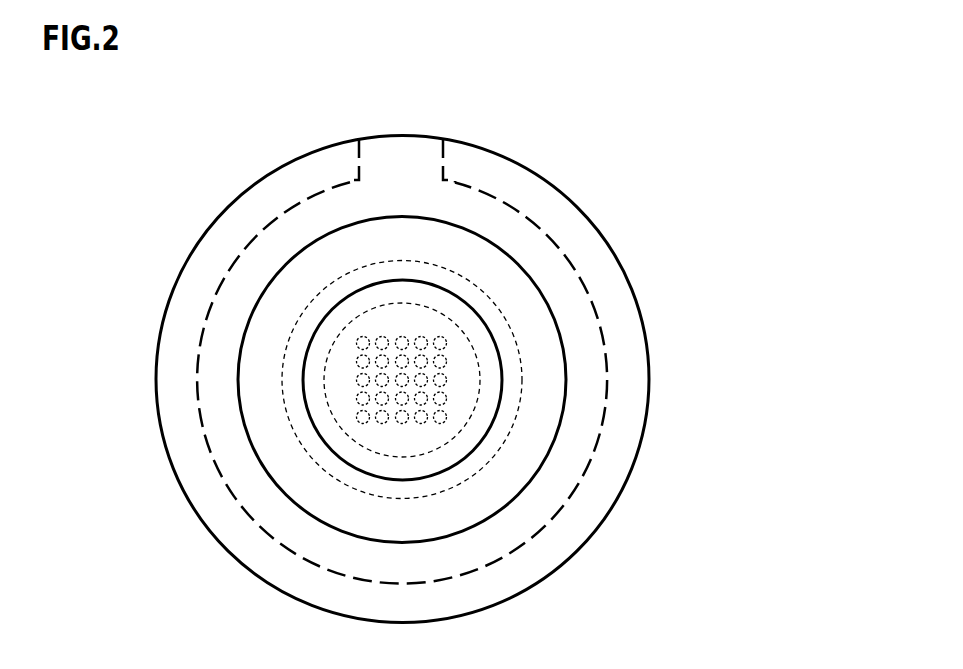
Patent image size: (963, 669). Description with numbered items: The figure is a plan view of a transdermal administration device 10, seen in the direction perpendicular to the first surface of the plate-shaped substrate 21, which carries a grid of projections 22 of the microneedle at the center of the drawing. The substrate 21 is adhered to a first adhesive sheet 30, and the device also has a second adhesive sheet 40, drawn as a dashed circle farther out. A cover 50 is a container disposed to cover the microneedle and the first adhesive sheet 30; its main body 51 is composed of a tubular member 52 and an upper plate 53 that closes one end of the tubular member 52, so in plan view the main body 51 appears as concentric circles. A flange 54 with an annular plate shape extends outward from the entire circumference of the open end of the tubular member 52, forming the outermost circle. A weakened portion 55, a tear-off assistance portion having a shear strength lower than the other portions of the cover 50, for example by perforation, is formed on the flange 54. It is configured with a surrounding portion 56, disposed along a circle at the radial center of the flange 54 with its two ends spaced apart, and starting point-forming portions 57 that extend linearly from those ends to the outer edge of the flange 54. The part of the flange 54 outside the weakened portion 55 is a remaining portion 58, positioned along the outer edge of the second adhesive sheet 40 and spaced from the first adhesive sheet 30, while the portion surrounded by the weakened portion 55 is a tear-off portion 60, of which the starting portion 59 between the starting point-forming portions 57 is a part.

The transdermal administration device 10 is at (187, 150).
The substrate 21 is at (393, 457).
The projection 22 is at (418, 423).
The first adhesive sheet 30 is at (318, 462).
The second adhesive sheet 40 is at (155, 358).
The cover 50 is at (170, 298).
The main body 51 is at (712, 340).
The tubular member 52 is at (563, 348).
The upper plate 53 is at (503, 392).
The flange 54 is at (163, 420).
The weakened portion 55 is at (460, 103).
The surrounding portion 56 is at (507, 204).
The starting point-forming portion 57 is at (445, 158).
The remaining portion 58 is at (605, 253).
The starting portion 59 is at (405, 145).
The tear-off portion 60 is at (543, 238).